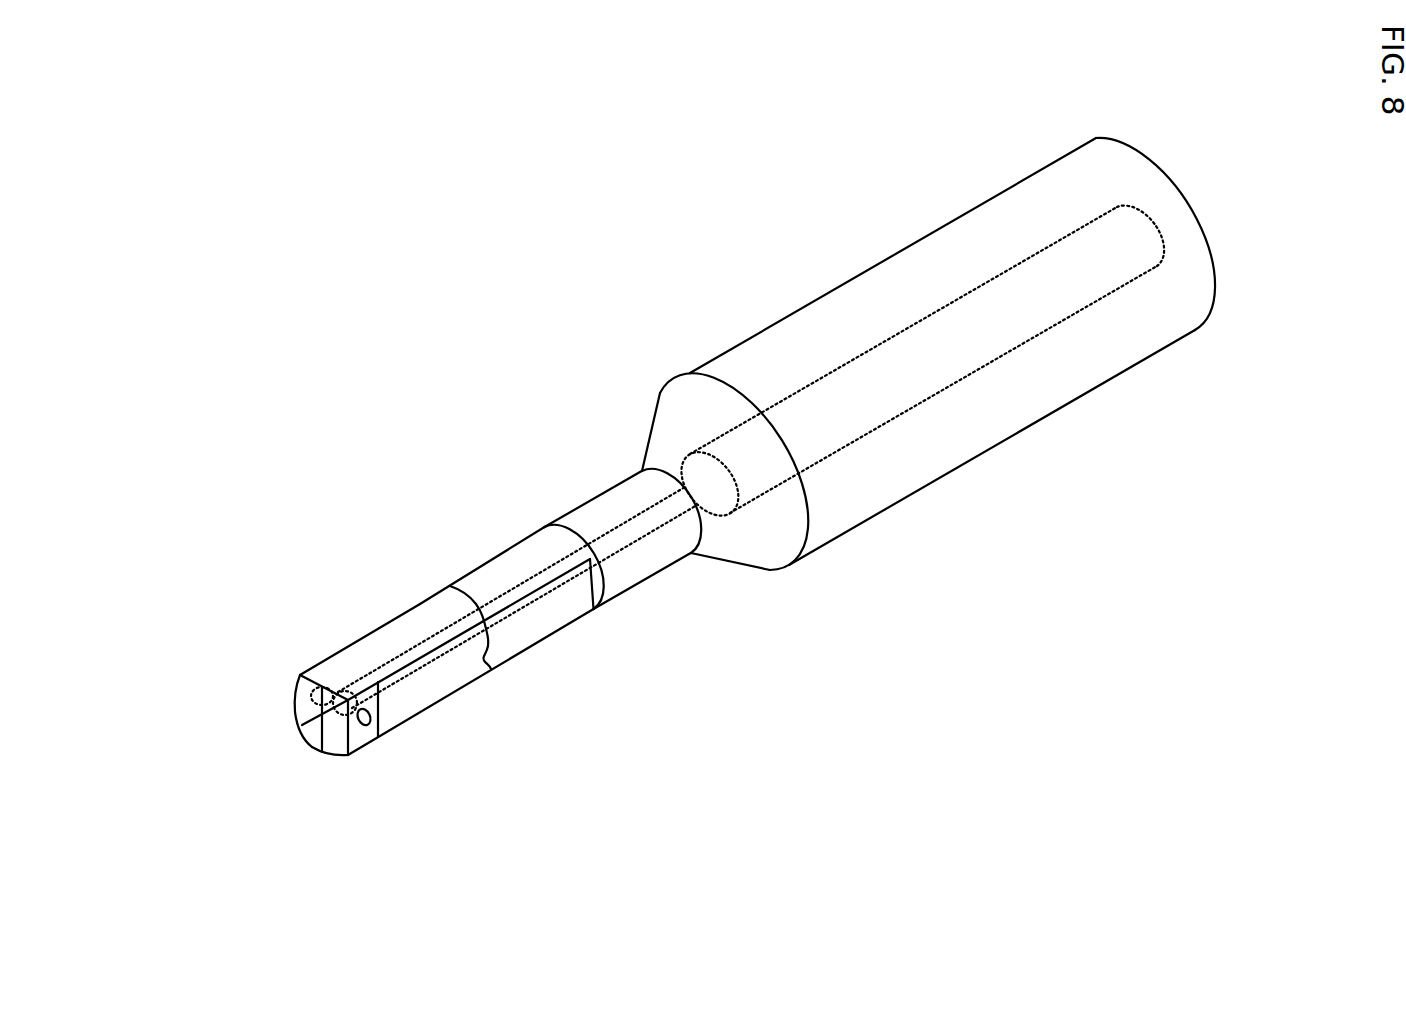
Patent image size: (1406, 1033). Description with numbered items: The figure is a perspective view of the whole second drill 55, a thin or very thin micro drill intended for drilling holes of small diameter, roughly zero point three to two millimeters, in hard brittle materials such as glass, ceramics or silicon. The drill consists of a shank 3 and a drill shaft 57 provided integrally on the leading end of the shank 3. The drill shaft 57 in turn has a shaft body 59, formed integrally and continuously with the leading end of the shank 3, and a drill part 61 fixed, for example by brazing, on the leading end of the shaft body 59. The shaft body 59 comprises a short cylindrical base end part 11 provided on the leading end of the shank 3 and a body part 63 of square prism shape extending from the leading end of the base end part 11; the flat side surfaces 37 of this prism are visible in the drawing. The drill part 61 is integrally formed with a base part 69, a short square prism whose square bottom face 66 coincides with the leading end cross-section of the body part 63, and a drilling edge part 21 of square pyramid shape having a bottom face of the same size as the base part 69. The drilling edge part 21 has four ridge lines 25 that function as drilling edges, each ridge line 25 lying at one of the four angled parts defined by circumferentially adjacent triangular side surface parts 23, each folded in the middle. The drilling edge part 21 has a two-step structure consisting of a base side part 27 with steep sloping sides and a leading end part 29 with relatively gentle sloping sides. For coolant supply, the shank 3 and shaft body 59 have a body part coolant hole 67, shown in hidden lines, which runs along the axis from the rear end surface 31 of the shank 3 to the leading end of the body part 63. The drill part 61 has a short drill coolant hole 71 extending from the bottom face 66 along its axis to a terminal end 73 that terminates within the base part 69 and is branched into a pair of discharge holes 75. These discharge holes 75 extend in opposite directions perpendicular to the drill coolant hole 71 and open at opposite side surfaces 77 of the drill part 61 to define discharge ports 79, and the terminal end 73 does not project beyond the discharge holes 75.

The shank 3 is at (953, 393).
The base end part 11 is at (615, 512).
The drilling edge part 21 is at (312, 768).
The triangular side surface parts 23 is at (294, 708).
The ridge lines 25 is at (302, 688).
The base side part 27 is at (306, 692).
The leading end part 29 is at (297, 730).
The rear end surface 31 is at (1192, 202).
The side surfaces 37 is at (430, 597).
The second drill 55 is at (456, 338).
The drill shaft 57 is at (417, 660).
The shaft body 59 is at (457, 565).
The drill part 61 is at (310, 650).
The body part 63 is at (492, 668).
The bottom face 66 is at (443, 690).
The body part coolant hole 67 is at (638, 533).
The base part 69 is at (304, 678).
The drill coolant hole 71 is at (342, 684).
The terminal end 73 is at (348, 740).
The discharge holes 75 is at (372, 705).
The side surfaces 77 is at (326, 668).
The discharge ports 79 is at (373, 715).